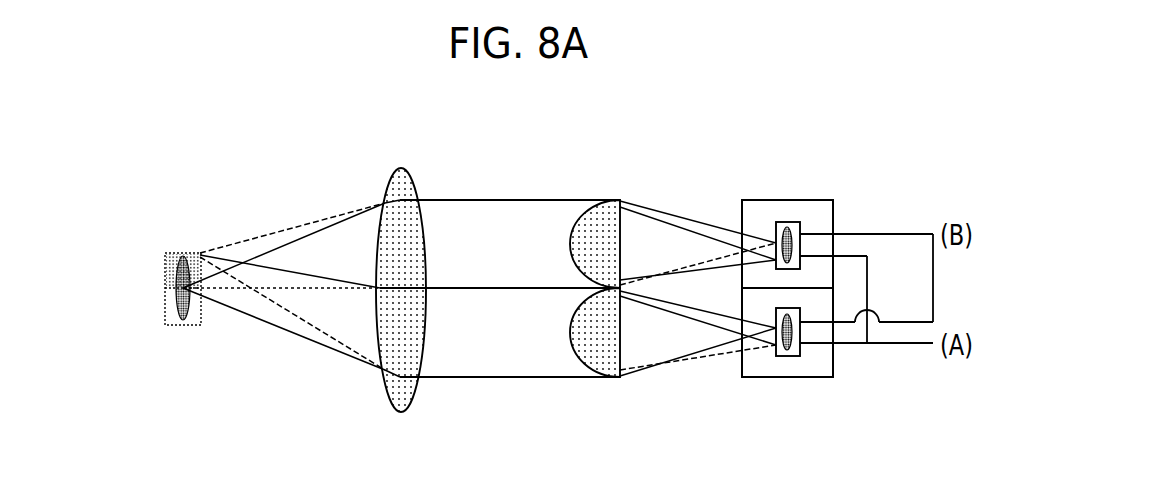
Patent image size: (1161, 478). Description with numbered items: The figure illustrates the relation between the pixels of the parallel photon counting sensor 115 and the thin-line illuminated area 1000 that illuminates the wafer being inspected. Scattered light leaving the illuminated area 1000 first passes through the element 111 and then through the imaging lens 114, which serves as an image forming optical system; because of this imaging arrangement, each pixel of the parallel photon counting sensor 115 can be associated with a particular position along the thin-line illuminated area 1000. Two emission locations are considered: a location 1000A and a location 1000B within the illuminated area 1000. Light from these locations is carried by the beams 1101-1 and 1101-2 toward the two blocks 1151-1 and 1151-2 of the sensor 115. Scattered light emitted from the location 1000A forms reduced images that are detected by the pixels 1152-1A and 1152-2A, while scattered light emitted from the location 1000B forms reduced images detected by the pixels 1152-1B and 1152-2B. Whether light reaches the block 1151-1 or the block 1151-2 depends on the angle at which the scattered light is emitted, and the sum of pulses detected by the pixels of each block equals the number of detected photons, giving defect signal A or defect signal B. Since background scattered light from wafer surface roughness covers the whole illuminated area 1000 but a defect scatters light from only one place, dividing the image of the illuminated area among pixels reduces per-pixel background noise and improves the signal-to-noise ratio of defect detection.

The thin-line illuminated area 1000 is at (178, 253).
The location in the thin-line illuminated area 1000A is at (167, 272).
The location in the thin-line illuminated area 1000B is at (170, 310).
The collimator lens 111 is at (390, 172).
The imaging lens 114 is at (597, 217).
The parallel photon counting sensor 115 is at (788, 200).
The first light beam 1101-1 is at (776, 235).
The second light beam 1101-2 is at (776, 320).
The block 1151-1 is at (836, 214).
The block 1151-2 is at (872, 367).
The pixel 1152-1A is at (800, 222).
The pixel 1152-1B is at (775, 223).
The pixel 1152-2A is at (783, 357).
The pixel 1152-2B is at (800, 357).